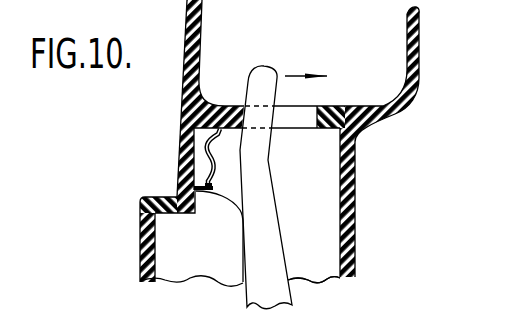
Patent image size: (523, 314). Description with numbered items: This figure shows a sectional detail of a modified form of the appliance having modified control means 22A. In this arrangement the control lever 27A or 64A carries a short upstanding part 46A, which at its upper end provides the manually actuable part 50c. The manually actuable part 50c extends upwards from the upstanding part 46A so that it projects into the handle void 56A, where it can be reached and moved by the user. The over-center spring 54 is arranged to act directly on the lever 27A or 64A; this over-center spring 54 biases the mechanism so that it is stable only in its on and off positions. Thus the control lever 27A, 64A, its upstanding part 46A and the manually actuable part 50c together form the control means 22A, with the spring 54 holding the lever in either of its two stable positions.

The control means 22A is at (292, 212).
The manually actuable part 50c is at (254, 88).
The handle void 56A is at (347, 40).
The over-center spring 54 is at (196, 161).
The upstanding part 46A is at (245, 247).
The control lever 27A is at (277, 280).
The control lever 64A is at (277, 280).